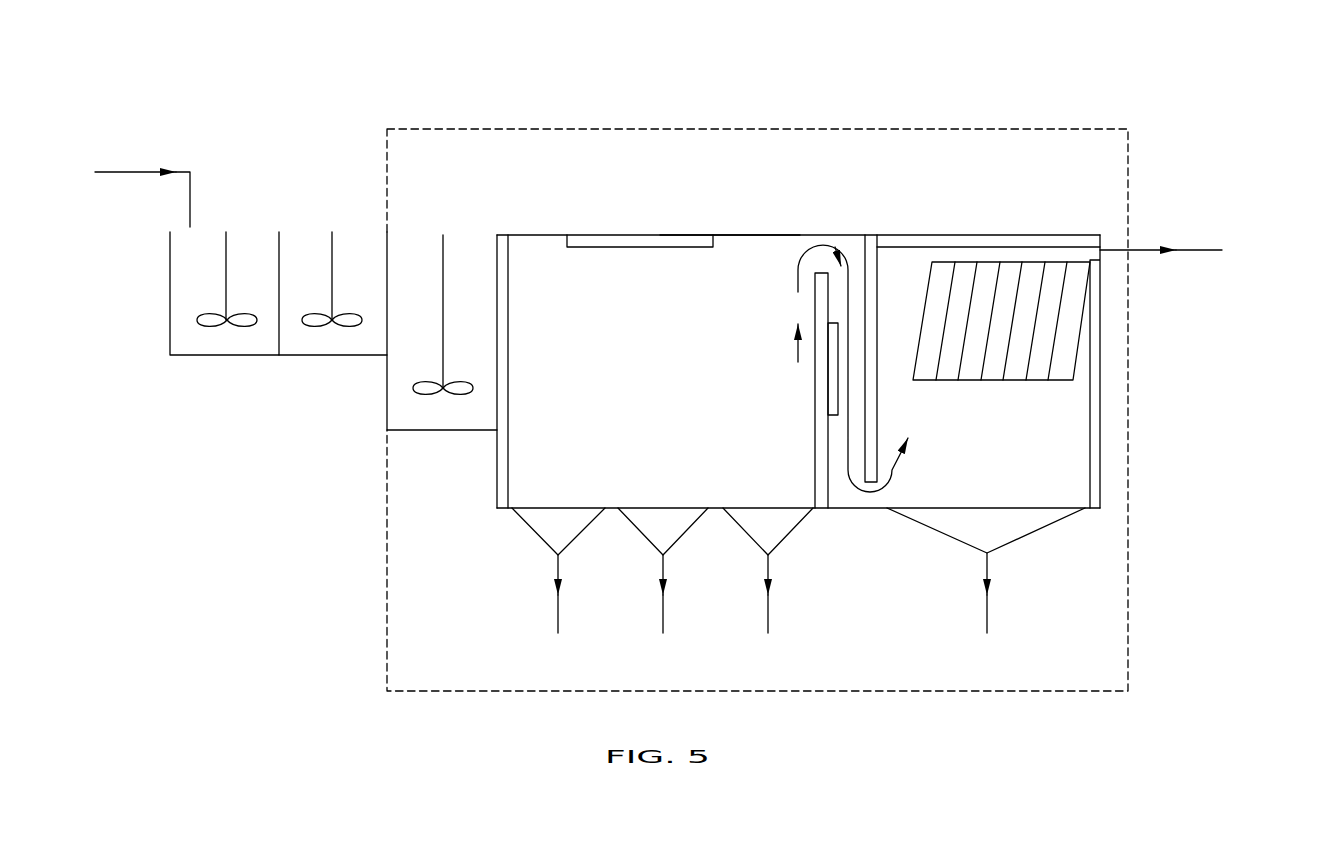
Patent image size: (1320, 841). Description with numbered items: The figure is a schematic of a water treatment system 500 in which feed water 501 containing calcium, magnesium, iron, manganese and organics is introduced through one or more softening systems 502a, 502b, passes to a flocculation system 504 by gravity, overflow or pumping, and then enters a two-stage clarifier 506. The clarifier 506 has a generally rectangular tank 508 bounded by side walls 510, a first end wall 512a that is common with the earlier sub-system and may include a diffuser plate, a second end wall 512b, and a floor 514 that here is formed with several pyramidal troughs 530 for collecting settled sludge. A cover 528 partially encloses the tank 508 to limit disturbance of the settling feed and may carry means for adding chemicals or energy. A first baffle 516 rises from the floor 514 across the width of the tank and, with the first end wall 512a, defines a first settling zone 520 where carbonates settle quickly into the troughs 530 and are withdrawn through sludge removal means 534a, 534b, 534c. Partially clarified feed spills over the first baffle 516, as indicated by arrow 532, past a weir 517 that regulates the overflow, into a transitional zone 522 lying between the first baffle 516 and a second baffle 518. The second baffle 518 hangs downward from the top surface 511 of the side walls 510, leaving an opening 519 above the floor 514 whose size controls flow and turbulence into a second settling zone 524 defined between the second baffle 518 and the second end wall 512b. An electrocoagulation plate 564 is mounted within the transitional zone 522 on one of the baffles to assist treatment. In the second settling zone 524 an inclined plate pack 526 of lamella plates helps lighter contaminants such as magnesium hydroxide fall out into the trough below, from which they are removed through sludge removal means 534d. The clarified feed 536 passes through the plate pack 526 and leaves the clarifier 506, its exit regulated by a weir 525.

The water treatment system 500 is at (328, 79).
The feed water 501 is at (140, 170).
The softening system 502a is at (225, 355).
The softening system 502b is at (340, 355).
The flocculation system 504 is at (422, 430).
The two-stage clarifier 506 is at (898, 112).
The tank 508 is at (777, 210).
The side wall 510 is at (536, 480).
The top surface 511 is at (735, 233).
The first end wall 512a is at (508, 298).
The second end wall 512b is at (1100, 425).
The floor 514 is at (832, 510).
The first baffle 516 is at (817, 433).
The weir 517 is at (821, 263).
The second baffle 518 is at (878, 388).
The opening 519 is at (876, 500).
The first settling zone 520 is at (657, 287).
The transitional zone 522 is at (850, 243).
The second settling zone 524 is at (995, 485).
The weir 525 is at (1104, 238).
The plate pack 526 is at (995, 262).
The cover 528 is at (598, 235).
The trough 530 is at (575, 540).
The arrow 532 is at (797, 292).
The sludge removal means 534a is at (560, 619).
The sludge removal means 534b is at (665, 619).
The sludge removal means 534c is at (770, 619).
The sludge removal means 534d is at (989, 614).
The clarified feed 536 is at (1230, 233).
The electrocoagulation plate 564 is at (821, 377).